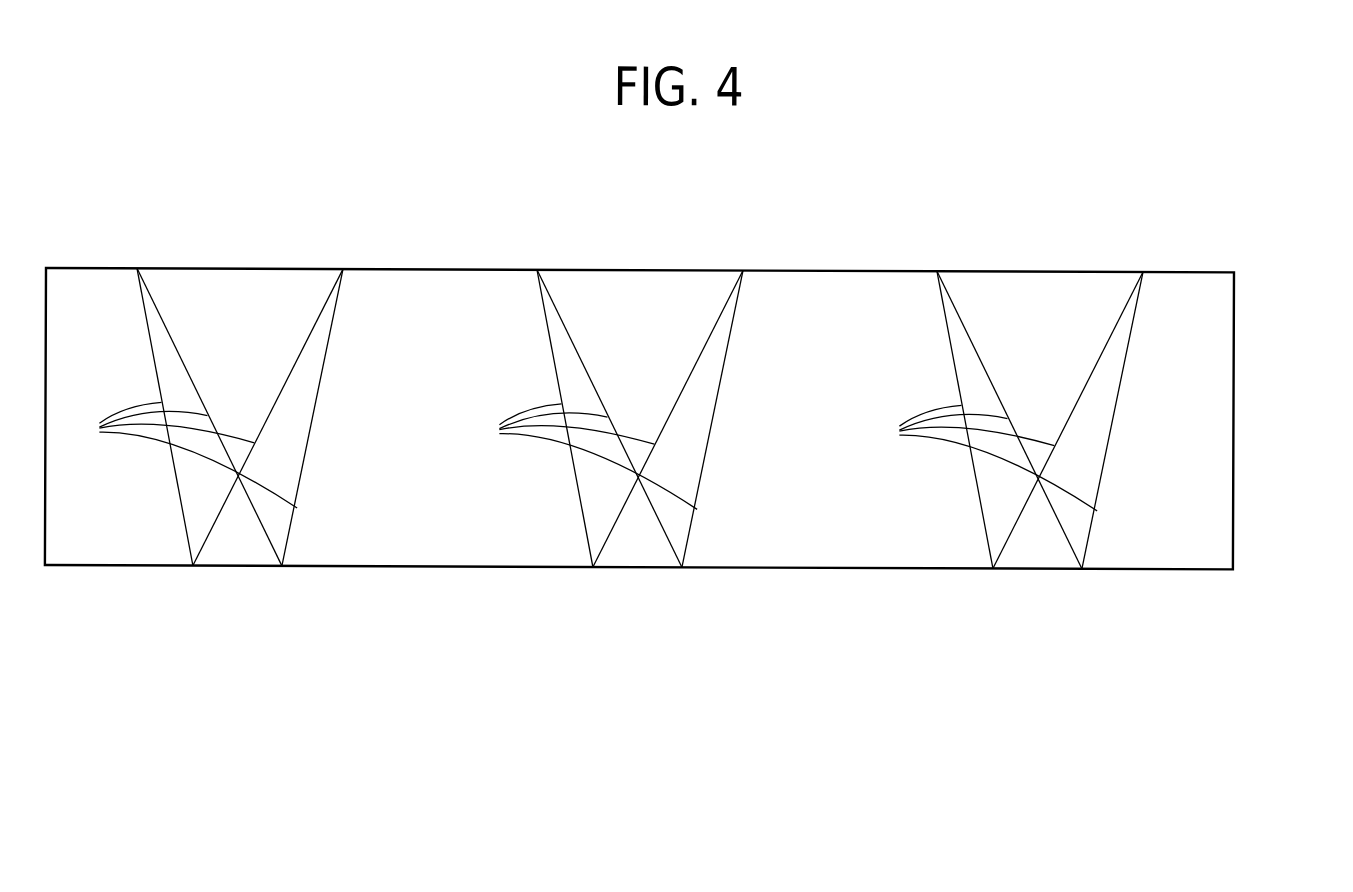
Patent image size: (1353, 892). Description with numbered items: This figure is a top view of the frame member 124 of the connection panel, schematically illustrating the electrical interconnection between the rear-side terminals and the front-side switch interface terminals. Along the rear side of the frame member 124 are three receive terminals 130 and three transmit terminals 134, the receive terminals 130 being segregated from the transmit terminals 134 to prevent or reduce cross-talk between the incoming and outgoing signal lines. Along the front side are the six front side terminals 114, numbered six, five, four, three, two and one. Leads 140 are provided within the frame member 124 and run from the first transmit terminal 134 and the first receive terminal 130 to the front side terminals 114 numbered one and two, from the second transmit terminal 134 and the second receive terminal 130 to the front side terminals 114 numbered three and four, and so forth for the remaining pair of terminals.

The frame member 124 is at (1234, 452).
The receive terminals 130 is at (137, 243).
The transmit terminals 134 is at (343, 243).
The leads 140 is at (577, 456).
The front side terminals 114 is at (281, 598).